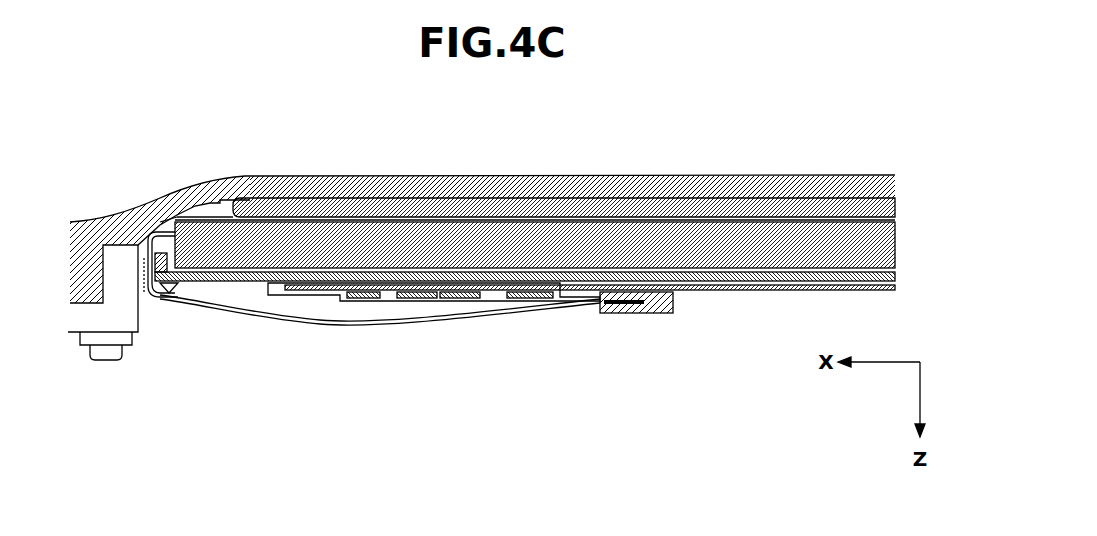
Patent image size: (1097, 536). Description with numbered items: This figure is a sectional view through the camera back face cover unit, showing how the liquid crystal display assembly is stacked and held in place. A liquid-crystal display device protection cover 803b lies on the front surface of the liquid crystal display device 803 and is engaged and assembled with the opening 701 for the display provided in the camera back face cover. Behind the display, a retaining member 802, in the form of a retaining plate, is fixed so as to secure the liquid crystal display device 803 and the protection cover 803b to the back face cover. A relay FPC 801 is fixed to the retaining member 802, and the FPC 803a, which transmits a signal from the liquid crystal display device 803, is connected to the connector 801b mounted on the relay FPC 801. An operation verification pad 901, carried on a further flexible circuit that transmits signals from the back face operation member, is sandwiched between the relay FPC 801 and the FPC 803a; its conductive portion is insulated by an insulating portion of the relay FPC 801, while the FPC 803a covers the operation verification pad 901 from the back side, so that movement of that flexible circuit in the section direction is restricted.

The opening 701 is at (283, 196).
The liquid-crystal display device protection cover 803b is at (457, 184).
The liquid crystal display device 803 is at (803, 229).
The FPC 803a is at (207, 313).
The retaining member 802 is at (753, 283).
The relay FPC 801 is at (303, 288).
The connector 801b is at (663, 315).
The operation verification pad 901 is at (418, 302).